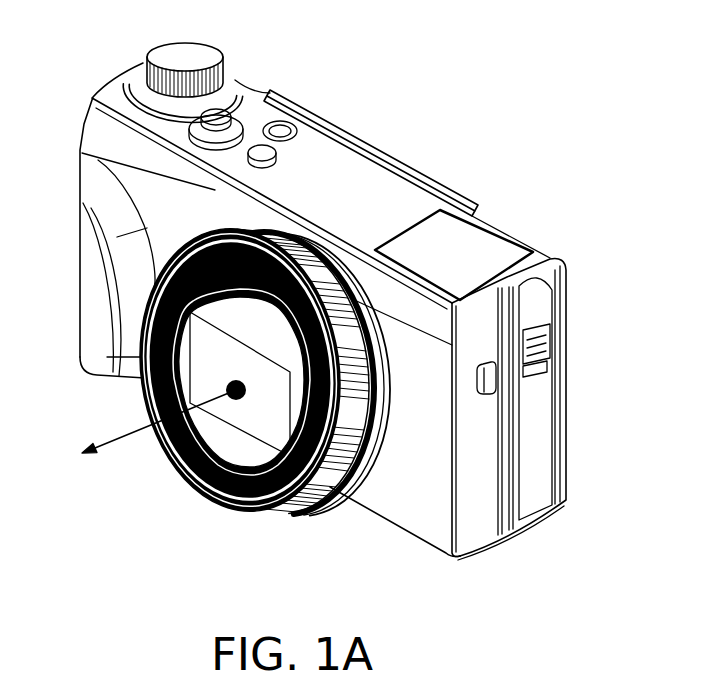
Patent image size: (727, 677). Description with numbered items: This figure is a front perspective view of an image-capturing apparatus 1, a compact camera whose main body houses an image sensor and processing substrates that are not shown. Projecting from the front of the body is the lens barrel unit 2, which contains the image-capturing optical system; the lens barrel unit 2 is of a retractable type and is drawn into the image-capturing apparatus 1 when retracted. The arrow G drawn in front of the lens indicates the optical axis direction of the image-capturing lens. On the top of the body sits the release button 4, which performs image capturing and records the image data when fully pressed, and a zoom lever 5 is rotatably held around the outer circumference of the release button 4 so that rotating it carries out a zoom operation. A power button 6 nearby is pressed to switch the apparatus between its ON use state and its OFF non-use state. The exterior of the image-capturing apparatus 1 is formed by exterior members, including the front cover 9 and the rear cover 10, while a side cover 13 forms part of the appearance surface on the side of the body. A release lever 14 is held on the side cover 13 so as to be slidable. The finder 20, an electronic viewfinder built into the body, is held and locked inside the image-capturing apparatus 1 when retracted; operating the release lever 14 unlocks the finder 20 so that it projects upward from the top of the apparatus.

The image-capturing apparatus 1 is at (66, 43).
The lens barrel unit 2 is at (253, 457).
The release button 4 is at (215, 111).
The zoom lever 5 is at (100, 151).
The power button 6 is at (293, 118).
The front cover 9 is at (473, 540).
The rear cover 10 is at (530, 453).
The side cover 13 is at (550, 370).
The release lever 14 is at (553, 330).
The finder 20 is at (467, 260).
The arrow indicating optical axis direction G is at (143, 436).